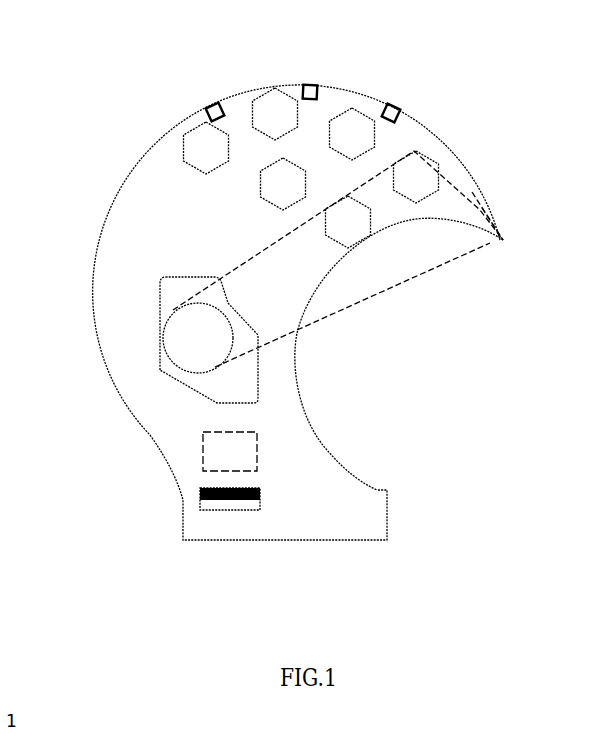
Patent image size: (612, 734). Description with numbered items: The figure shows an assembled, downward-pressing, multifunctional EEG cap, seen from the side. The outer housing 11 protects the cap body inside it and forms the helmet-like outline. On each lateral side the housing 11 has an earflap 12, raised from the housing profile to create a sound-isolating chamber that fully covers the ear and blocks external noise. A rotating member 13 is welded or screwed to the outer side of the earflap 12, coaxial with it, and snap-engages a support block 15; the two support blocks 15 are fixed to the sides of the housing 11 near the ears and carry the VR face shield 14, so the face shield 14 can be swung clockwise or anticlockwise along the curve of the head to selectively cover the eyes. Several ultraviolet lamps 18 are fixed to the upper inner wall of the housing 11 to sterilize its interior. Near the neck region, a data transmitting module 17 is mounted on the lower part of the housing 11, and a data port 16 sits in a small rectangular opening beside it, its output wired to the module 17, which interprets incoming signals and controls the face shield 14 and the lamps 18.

The housing 11 is at (135, 170).
The earflaps 12 is at (229, 379).
The rotating members 13 is at (197, 340).
The VR face shield 14 is at (503, 240).
The support blocks 15 is at (393, 254).
The data port 16 is at (227, 500).
The data transmitting module 17 is at (231, 452).
The ultraviolet lamp 18 is at (312, 85).